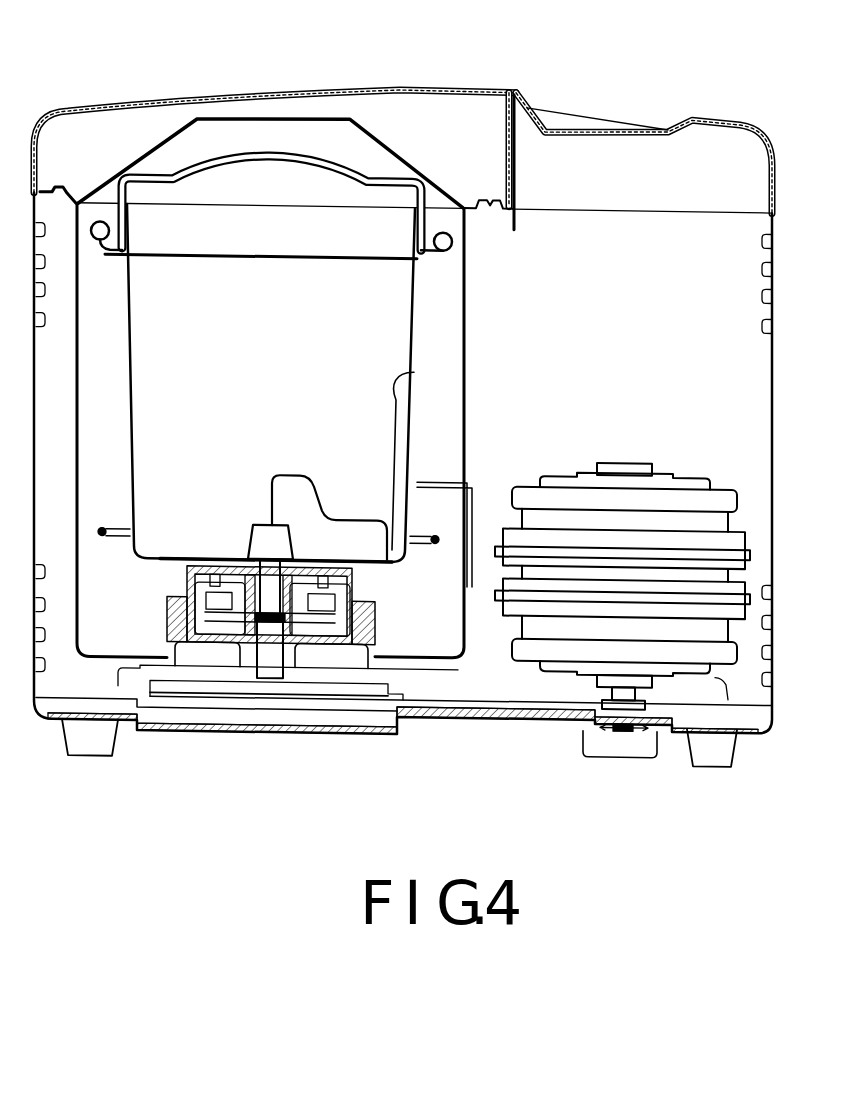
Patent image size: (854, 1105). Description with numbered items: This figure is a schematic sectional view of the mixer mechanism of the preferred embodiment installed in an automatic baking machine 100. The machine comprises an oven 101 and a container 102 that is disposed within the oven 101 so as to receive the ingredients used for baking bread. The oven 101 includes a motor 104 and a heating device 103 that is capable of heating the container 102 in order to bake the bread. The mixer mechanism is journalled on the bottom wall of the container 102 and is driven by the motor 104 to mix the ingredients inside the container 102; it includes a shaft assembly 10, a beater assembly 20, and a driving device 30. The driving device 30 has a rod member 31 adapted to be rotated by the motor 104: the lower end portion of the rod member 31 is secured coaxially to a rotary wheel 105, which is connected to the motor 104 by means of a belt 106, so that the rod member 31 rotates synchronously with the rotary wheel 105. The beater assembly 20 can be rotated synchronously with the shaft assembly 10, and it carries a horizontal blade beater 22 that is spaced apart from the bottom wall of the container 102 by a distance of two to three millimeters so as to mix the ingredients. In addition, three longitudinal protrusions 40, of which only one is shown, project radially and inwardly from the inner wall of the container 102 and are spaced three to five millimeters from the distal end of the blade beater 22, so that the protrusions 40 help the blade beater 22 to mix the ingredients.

The automatic baking machine 100 is at (437, 87).
The oven 101 is at (466, 304).
The container 102 is at (418, 338).
The longitudinal protrusions 40 is at (414, 376).
The heating device 103 is at (437, 534).
The motor 104 is at (605, 494).
The beater assembly 20 is at (247, 525).
The horizontal blade beater 22 is at (333, 525).
The shaft assembly 10 is at (246, 592).
The driving device 30 is at (258, 658).
The rod member 31 is at (268, 670).
The rotary wheel 105 is at (335, 712).
The belt 106 is at (516, 708).